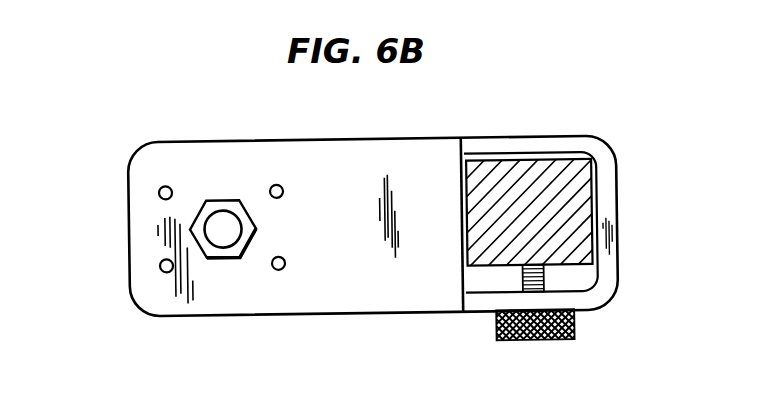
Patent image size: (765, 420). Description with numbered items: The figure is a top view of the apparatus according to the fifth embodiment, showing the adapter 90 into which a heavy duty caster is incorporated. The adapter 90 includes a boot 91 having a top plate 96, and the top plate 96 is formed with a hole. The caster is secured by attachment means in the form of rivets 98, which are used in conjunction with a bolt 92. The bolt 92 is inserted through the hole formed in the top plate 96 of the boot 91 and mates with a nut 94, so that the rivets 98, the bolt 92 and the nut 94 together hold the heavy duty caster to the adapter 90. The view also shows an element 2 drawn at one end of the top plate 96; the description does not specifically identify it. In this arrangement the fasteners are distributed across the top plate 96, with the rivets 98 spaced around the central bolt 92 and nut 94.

The battery 2 is at (596, 213).
The adapter 90 is at (130, 326).
The boot 91 is at (318, 314).
The bolt 92 is at (220, 212).
The nut 94 is at (223, 204).
The top plate 96 is at (427, 149).
The rivets 98 is at (160, 191).